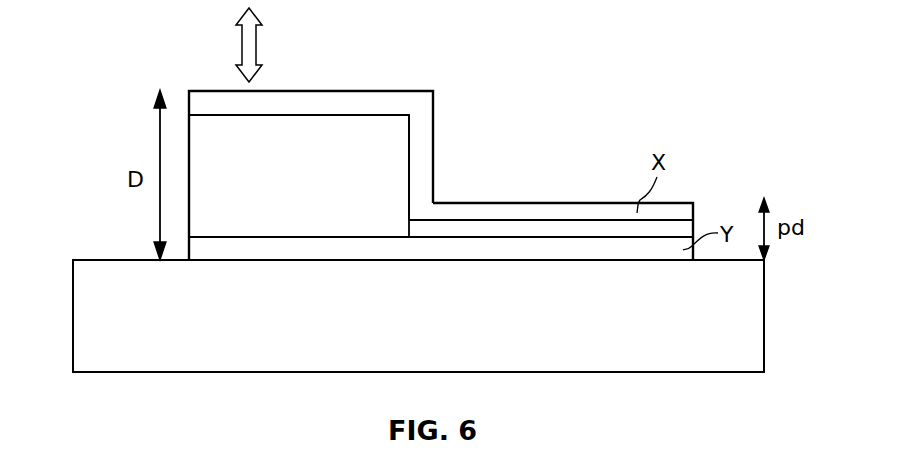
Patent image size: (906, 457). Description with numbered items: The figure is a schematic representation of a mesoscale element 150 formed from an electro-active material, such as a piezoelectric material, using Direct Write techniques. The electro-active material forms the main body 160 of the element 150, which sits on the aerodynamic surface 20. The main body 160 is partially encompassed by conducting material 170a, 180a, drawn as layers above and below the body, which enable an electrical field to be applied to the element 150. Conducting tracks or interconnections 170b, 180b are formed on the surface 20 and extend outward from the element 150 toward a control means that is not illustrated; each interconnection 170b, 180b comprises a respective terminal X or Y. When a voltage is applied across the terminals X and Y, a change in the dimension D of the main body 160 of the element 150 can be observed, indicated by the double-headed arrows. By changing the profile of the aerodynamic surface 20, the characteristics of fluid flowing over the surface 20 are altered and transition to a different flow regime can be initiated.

The surface 20 is at (100, 258).
The mesoscale element 150 is at (472, 151).
The main body 160 is at (307, 195).
The conducting material 170a is at (291, 103).
The conducting track 170b is at (503, 215).
The conducting material 180a is at (263, 250).
The conducting track 180b is at (570, 248).